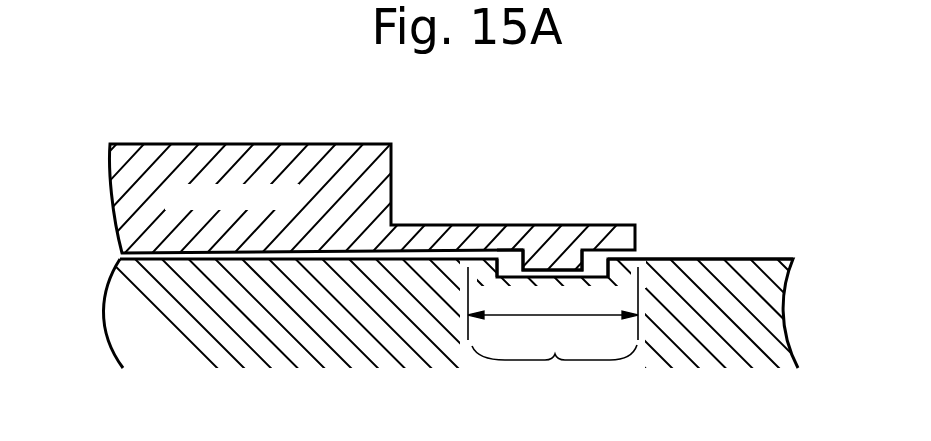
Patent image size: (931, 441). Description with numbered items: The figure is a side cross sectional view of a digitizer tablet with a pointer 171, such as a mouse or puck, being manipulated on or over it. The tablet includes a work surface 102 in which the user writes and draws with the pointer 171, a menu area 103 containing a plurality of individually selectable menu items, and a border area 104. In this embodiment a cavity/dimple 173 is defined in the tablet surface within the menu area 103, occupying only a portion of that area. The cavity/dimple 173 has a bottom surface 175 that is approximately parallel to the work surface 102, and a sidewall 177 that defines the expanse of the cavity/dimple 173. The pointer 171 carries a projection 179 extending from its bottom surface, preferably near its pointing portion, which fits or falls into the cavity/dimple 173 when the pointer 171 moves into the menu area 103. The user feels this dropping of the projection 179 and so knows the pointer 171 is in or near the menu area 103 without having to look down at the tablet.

The pointer 171 is at (345, 160).
The work surface 102 is at (308, 259).
The menu area 103 is at (583, 365).
The border area 104 is at (713, 258).
The bottom surface 175 is at (506, 259).
The projection 179 is at (514, 252).
The cavity/dimple 173 is at (590, 261).
The sidewall 177 is at (607, 266).